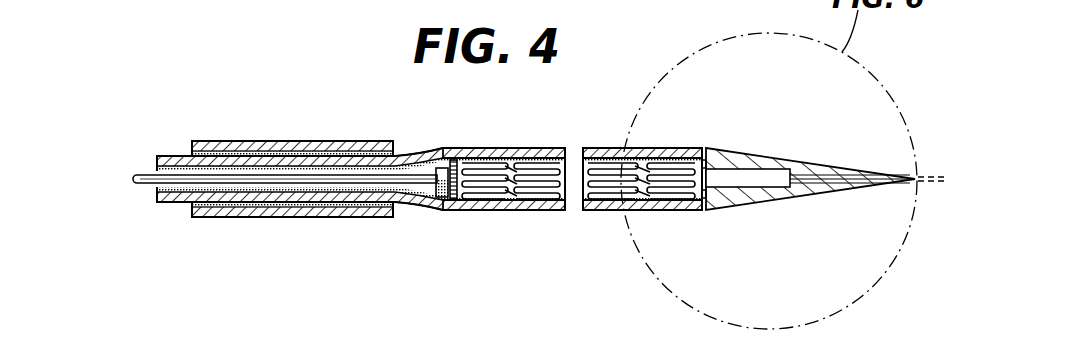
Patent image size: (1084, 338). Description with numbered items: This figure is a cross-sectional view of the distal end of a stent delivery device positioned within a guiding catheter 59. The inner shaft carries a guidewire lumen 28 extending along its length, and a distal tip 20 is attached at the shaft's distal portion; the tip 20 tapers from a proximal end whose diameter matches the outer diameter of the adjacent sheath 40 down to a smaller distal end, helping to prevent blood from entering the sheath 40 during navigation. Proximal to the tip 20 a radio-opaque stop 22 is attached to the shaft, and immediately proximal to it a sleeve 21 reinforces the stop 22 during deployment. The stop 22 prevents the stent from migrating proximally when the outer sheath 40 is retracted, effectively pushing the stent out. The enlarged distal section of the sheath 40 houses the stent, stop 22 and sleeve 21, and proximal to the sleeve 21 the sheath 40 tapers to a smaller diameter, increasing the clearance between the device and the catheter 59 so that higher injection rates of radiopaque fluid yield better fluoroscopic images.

The distal tip 20 is at (788, 200).
The sleeve 21 is at (441, 190).
The stop 22 is at (453, 160).
The guidewire lumen 28 is at (138, 185).
The sheath 40 is at (428, 157).
The guiding catheter 59 is at (265, 140).